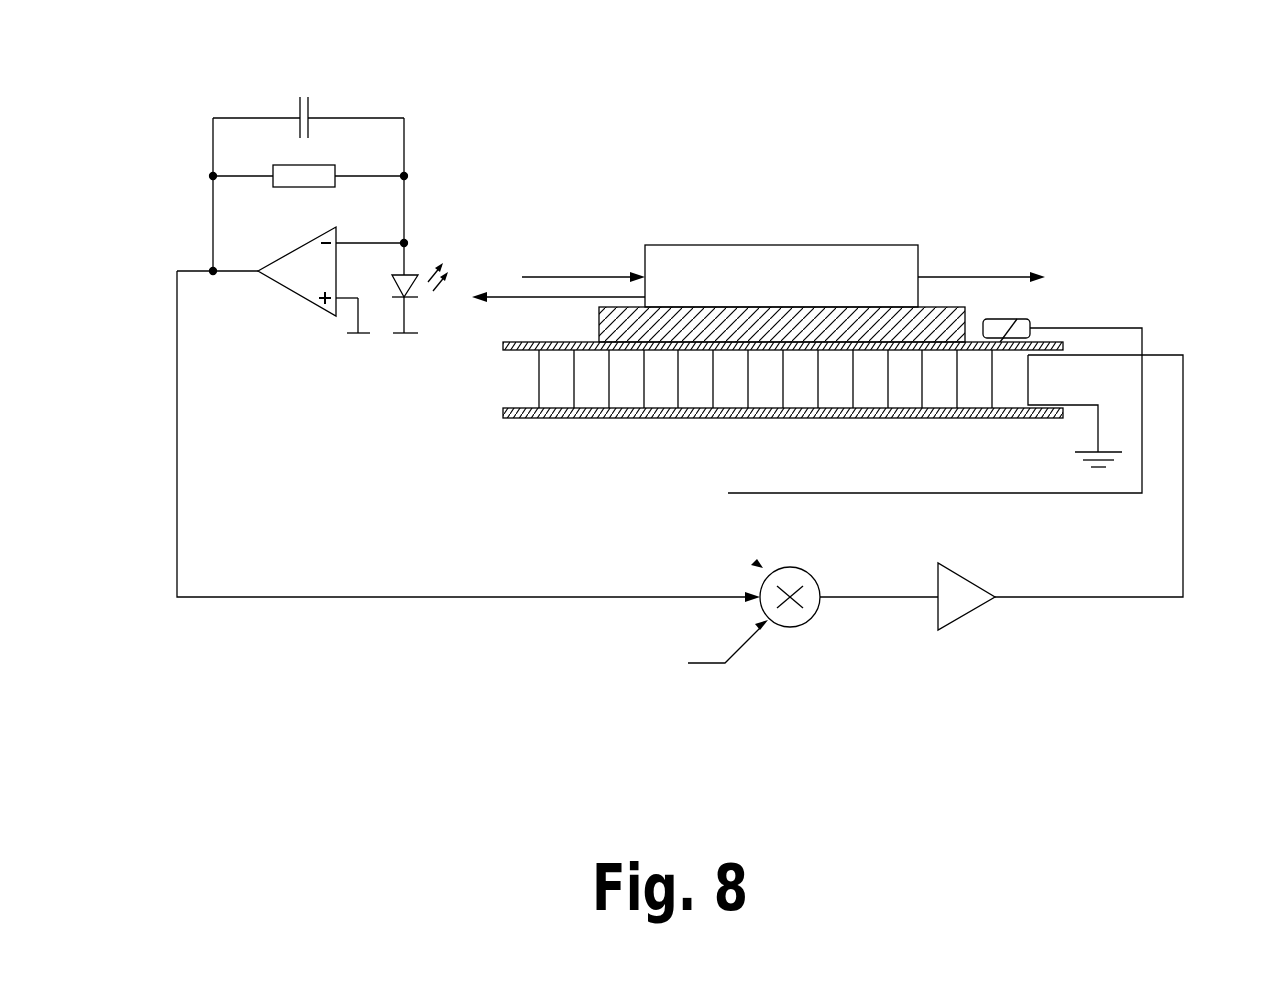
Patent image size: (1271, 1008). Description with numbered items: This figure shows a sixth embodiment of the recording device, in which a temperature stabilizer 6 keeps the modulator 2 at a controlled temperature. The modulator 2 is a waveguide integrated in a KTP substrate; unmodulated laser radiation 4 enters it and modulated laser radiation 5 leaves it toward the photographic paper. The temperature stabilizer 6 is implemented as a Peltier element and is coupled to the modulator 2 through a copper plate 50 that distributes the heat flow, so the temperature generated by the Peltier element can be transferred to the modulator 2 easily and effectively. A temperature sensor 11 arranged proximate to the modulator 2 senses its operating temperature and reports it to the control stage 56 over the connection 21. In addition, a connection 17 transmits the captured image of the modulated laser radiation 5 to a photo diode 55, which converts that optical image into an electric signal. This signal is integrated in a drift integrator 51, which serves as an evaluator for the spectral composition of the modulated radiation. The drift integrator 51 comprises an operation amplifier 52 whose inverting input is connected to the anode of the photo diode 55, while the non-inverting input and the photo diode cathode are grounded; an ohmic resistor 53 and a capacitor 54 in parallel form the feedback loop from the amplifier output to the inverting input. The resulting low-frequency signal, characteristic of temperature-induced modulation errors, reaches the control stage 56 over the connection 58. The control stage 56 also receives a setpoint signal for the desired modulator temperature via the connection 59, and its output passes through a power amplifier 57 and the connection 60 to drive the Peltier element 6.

The modulator 2 is at (860, 245).
The laser radiation 4 is at (575, 275).
The modulated laser radiation 5 is at (973, 275).
The temperature stabilizer 6 is at (625, 388).
The temperature sensor 11 is at (1028, 318).
The connection 17 is at (512, 300).
The connection 21 is at (1052, 495).
The copper plate 50 is at (718, 327).
The drift integrator 51 is at (183, 178).
The operation amplifier 52 is at (295, 283).
The ohmic resistor 53 is at (295, 182).
The capacitor 54 is at (308, 98).
The photo diode 55 is at (417, 273).
The control stage 56 is at (805, 617).
The power amplifier 57 is at (972, 617).
The connection 58 is at (412, 600).
The connection 59 is at (703, 665).
The connection 60 is at (1185, 500).